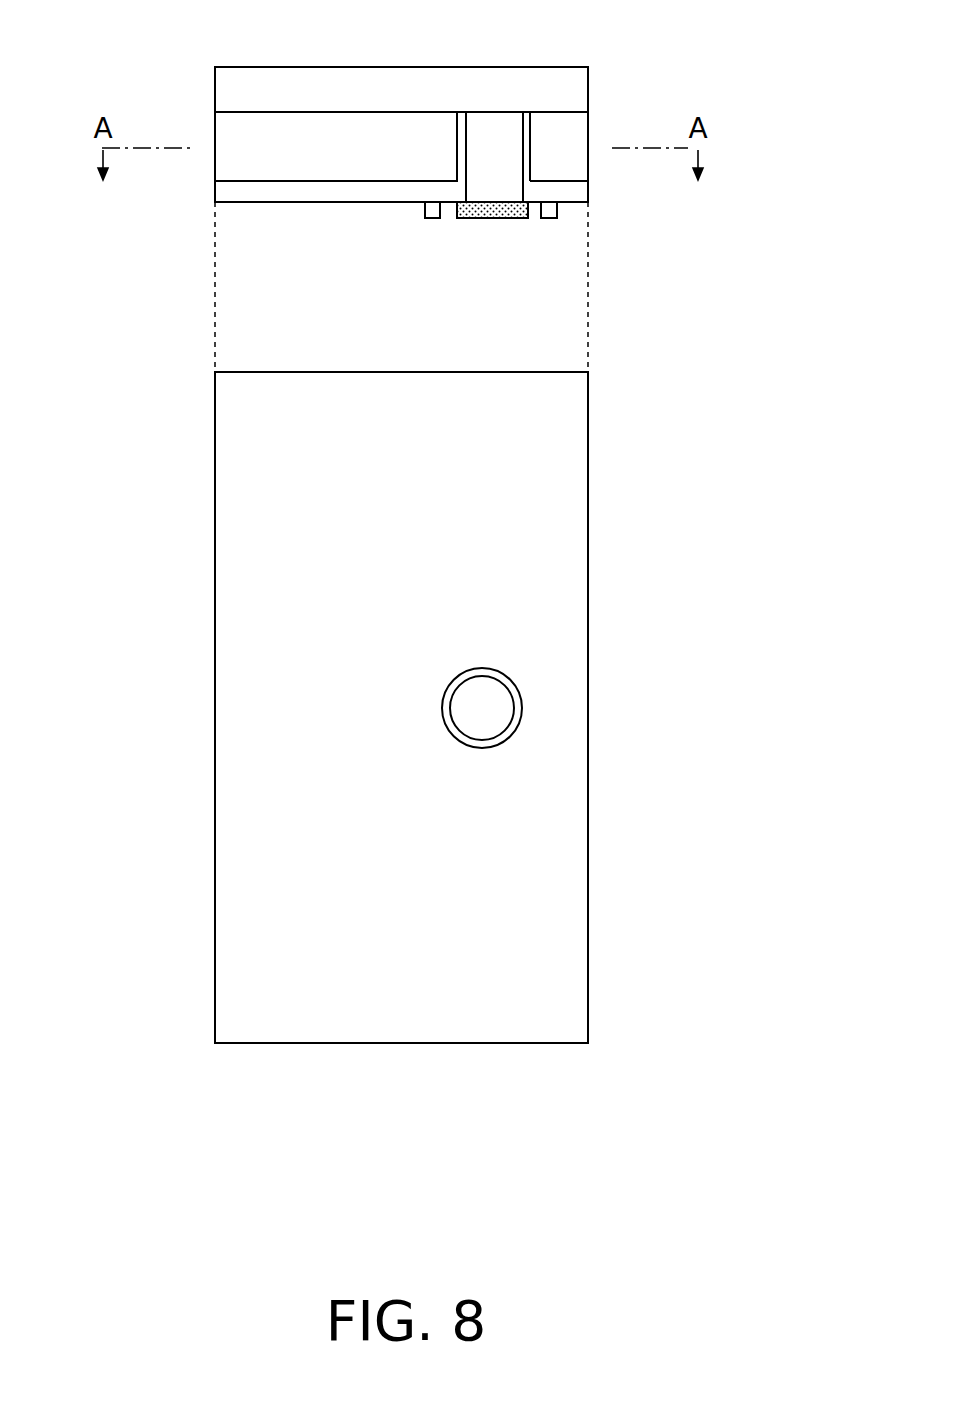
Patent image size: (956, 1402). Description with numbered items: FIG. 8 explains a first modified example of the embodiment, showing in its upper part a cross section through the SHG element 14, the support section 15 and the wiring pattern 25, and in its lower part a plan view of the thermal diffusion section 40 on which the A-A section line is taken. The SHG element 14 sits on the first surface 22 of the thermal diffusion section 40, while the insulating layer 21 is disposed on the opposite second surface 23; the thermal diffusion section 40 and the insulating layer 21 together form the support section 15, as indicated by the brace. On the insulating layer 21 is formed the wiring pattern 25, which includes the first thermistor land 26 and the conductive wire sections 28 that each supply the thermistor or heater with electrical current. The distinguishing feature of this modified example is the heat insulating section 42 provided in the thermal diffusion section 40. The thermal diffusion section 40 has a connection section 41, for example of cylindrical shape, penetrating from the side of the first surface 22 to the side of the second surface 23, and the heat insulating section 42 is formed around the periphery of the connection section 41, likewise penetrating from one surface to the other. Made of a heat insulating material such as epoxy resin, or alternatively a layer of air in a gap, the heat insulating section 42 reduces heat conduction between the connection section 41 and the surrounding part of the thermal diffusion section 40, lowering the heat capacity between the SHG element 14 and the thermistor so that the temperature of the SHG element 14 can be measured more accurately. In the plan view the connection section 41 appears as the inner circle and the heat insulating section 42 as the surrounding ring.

The SHG element 14 is at (222, 92).
The support section 15 is at (122, 202).
The insulating layer 21 is at (222, 193).
The first surface 22 is at (556, 112).
The second surface 23 is at (573, 183).
The wiring pattern 25 is at (570, 285).
The first thermistor land 26 is at (490, 220).
The conductive wire sections 28 is at (432, 222).
The thermal diffusion section 40 is at (222, 172).
The connection section 41 is at (494, 122).
The heat insulating section 42 is at (461, 112).